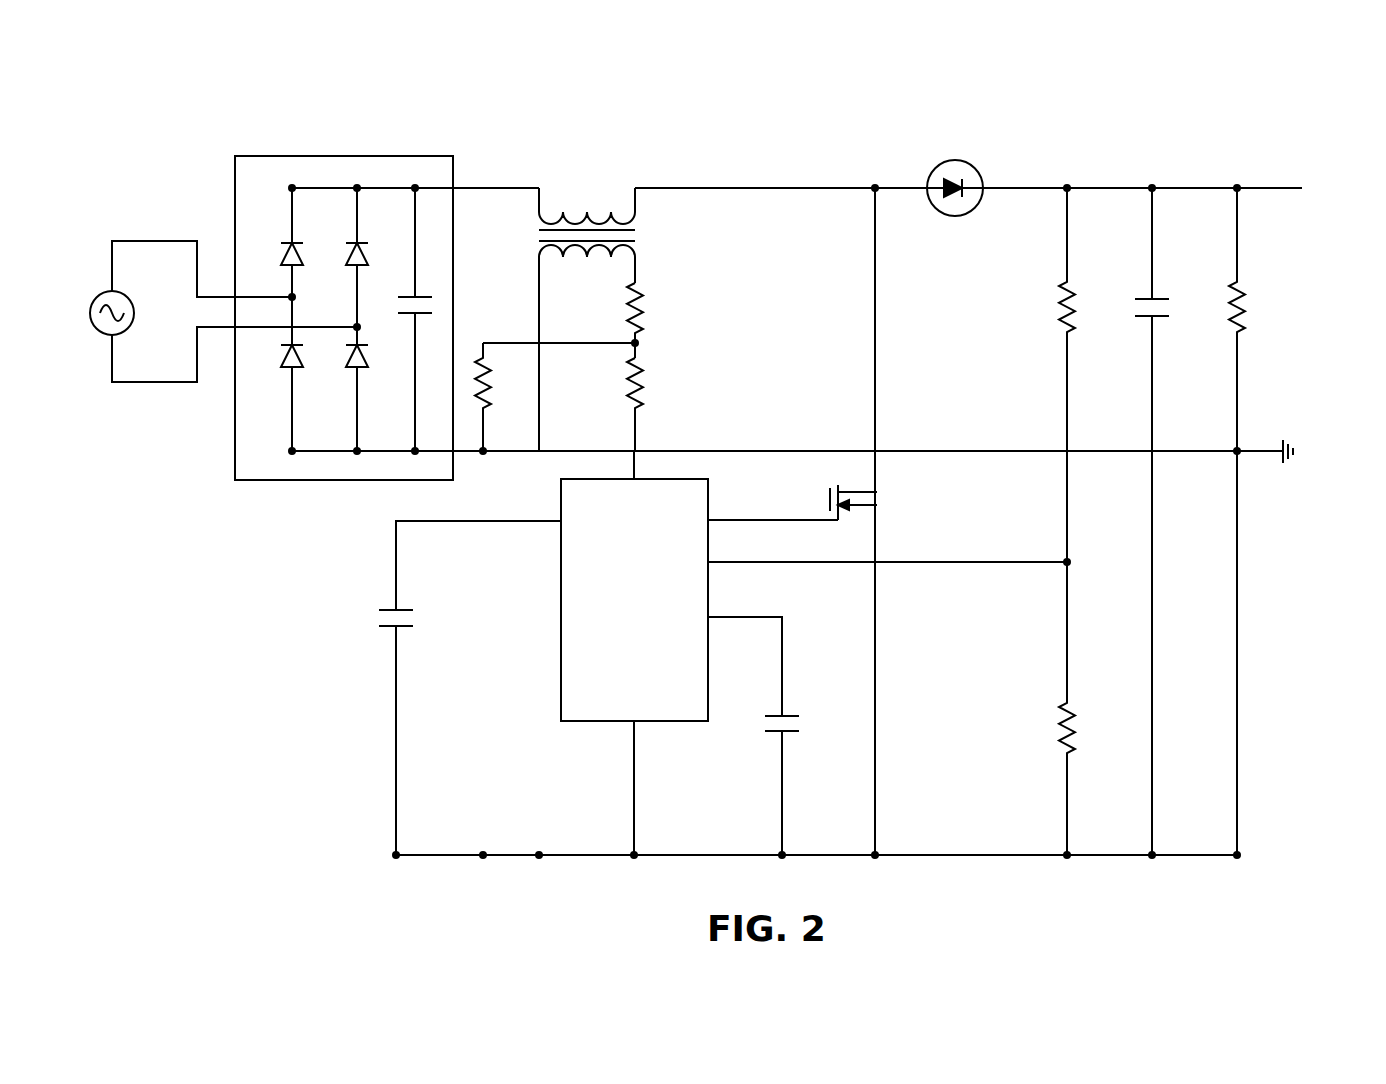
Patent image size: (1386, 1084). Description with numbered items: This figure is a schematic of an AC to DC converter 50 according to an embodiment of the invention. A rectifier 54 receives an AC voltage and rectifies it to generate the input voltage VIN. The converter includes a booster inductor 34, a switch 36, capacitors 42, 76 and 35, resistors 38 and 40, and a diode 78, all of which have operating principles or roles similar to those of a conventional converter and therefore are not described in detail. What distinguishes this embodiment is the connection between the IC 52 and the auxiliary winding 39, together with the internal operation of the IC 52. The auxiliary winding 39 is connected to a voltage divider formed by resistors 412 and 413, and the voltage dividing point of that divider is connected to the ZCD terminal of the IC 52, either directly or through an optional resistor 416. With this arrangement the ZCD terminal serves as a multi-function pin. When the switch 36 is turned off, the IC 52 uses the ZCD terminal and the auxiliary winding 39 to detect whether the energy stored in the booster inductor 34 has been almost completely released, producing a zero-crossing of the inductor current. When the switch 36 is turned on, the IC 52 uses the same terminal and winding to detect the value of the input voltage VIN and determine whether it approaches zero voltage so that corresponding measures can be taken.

The AC to DC converter 50 is at (1083, 128).
The rectifier 54 is at (330, 156).
The booster inductor 34 is at (565, 200).
The auxiliary winding 39 is at (560, 255).
The resistor 412 is at (645, 300).
The resistor 413 is at (495, 377).
The optional resistor 416 is at (648, 382).
The IC 52 is at (634, 654).
The capacitor 35 is at (382, 608).
The switch 36 is at (880, 508).
The capacitor 42 is at (793, 707).
The diode 78 is at (960, 160).
The resistor 38 is at (1056, 295).
The resistor 40 is at (1061, 714).
The capacitor 76 is at (1136, 297).